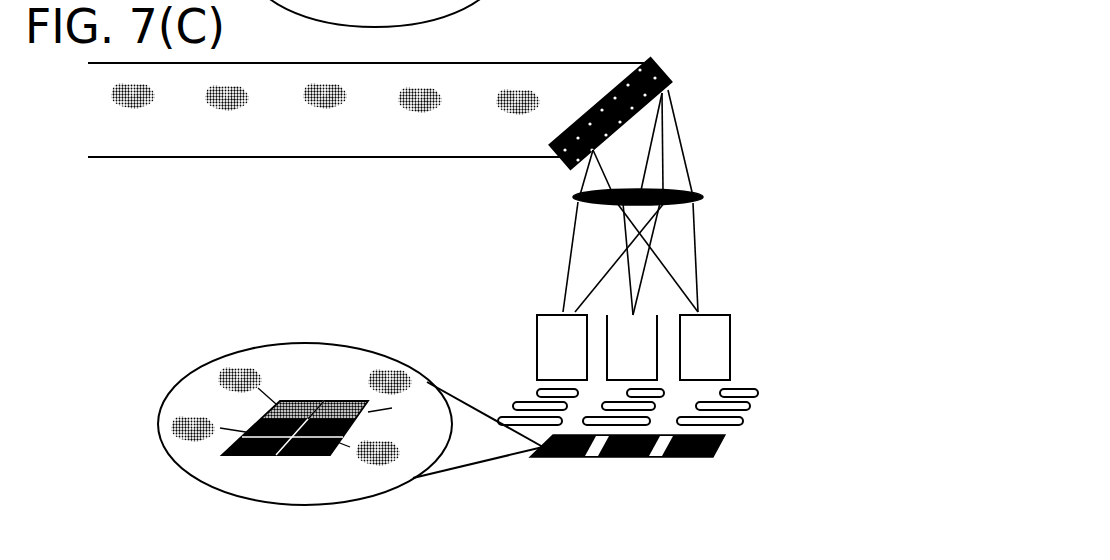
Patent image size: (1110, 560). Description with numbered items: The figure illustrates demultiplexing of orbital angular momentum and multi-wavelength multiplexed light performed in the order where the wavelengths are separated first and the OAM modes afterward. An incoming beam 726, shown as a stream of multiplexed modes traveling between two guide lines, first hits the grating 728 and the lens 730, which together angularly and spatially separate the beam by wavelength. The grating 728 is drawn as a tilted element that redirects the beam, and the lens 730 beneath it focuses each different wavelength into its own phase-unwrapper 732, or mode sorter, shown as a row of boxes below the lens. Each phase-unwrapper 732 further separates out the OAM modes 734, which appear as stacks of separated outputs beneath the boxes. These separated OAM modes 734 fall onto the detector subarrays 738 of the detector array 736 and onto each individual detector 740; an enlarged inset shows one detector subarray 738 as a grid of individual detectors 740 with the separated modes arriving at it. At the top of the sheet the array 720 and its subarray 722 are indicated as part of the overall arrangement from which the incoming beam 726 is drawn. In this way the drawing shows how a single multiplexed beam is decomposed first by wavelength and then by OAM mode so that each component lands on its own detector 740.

The array 720 is at (829, 21).
The subarray 722 is at (401, 18).
The incoming beam 726 is at (366, 110).
The grating 728 is at (670, 113).
The lens 730 is at (676, 202).
The phase-unwrapper 732 is at (607, 315).
The OAM modes 734 is at (706, 366).
The detector array 736 is at (713, 478).
The detector subarray 738 is at (350, 426).
The individual detector 740 is at (295, 405).